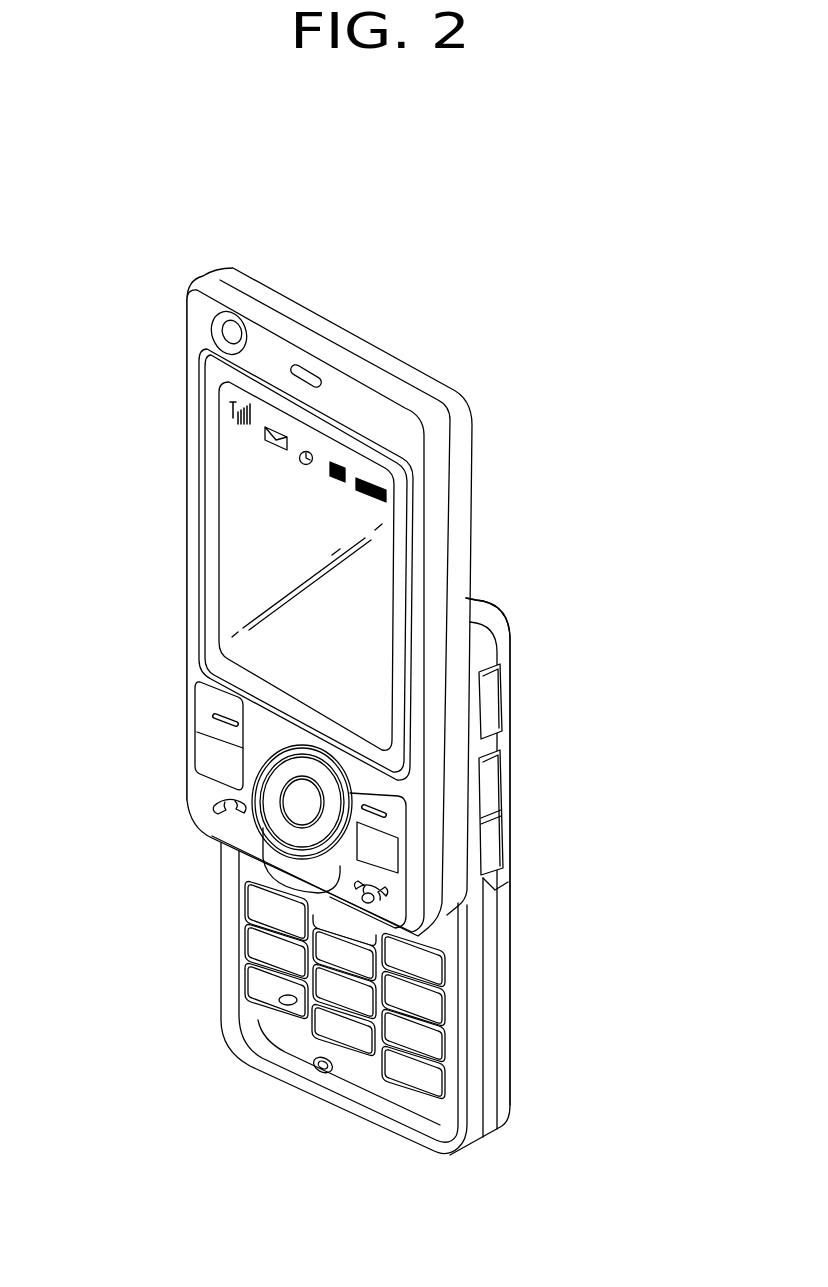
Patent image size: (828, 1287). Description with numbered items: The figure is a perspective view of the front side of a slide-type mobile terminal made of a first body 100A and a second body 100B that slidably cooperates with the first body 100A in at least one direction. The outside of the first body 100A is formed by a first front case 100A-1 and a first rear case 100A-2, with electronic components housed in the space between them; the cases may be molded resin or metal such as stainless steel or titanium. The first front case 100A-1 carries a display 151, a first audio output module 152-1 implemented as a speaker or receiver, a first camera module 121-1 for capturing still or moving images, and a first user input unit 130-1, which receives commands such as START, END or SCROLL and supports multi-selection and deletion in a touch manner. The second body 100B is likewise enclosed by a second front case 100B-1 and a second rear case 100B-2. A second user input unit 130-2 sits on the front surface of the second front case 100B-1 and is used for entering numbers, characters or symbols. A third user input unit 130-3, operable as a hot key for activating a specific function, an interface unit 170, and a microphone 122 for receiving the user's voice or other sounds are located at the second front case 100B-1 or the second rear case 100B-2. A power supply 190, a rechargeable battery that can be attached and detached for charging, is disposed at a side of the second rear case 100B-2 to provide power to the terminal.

The first body 100A is at (149, 412).
The first front case 100A-1 is at (440, 480).
The first rear case 100A-2 is at (462, 455).
The second body 100B is at (214, 916).
The second front case 100B-1 is at (485, 660).
The second rear case 100B-2 is at (482, 612).
The first camera module 121-1 is at (233, 332).
The microphone 122 is at (323, 1072).
The first user input unit 130-1 is at (210, 740).
The second user input unit 130-2 is at (257, 977).
The third user input unit 130-3 is at (492, 845).
The display 151 is at (235, 508).
The first audio output module 152-1 is at (307, 368).
The interface unit 170 is at (493, 695).
The power supply 190 is at (502, 1018).